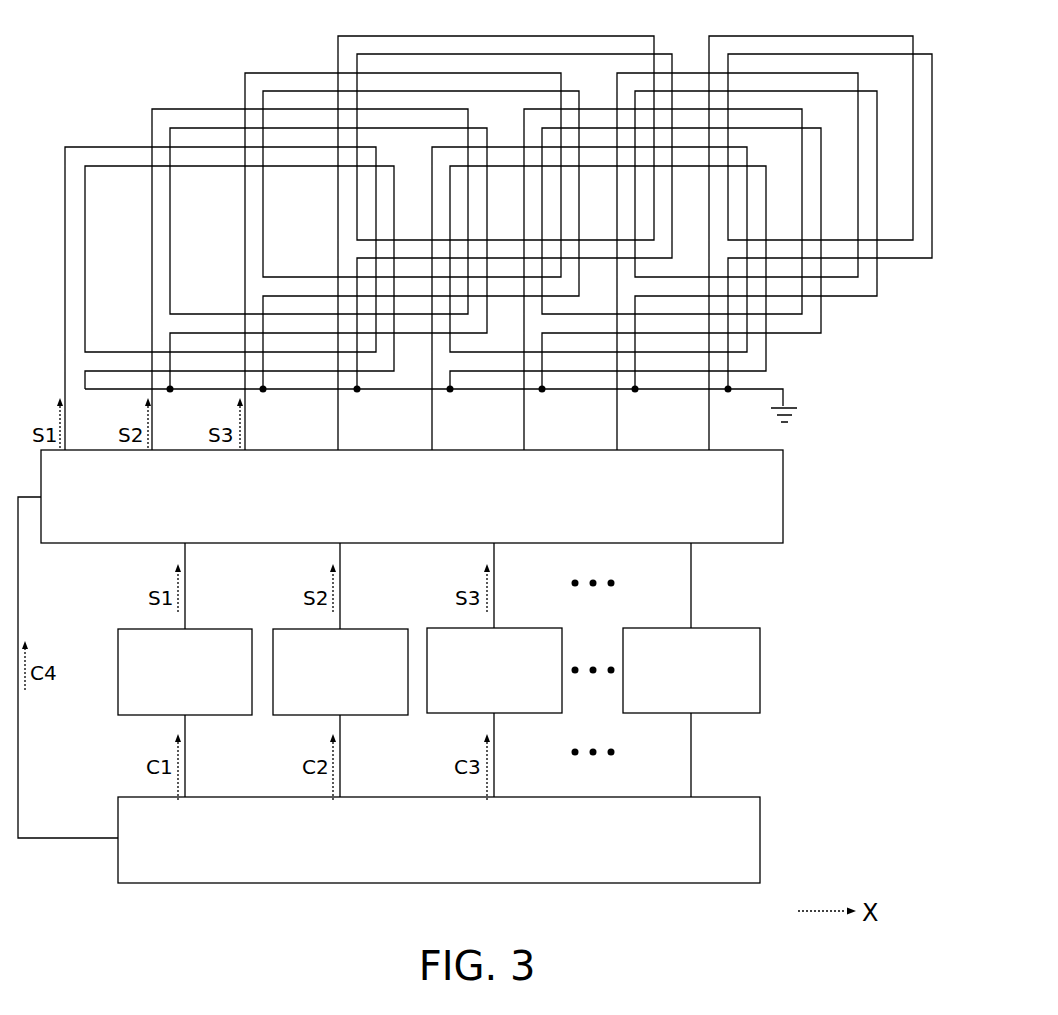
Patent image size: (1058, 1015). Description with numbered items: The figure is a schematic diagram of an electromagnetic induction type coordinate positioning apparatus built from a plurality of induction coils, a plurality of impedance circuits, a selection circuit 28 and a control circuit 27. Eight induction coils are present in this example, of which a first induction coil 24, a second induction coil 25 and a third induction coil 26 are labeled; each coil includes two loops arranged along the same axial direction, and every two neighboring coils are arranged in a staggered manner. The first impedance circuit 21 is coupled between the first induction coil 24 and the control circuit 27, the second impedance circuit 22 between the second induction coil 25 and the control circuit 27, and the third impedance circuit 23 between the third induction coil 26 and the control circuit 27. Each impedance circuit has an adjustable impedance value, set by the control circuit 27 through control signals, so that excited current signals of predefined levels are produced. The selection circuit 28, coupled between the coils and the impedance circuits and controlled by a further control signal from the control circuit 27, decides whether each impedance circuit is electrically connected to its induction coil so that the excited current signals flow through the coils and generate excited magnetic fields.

The first impedance circuit 21 is at (220, 629).
The second impedance circuit 22 is at (376, 629).
The third impedance circuit 23 is at (528, 628).
The first induction coil 24 is at (92, 146).
The second induction coil 25 is at (183, 108).
The third induction coil 26 is at (273, 72).
The control circuit 27 is at (760, 838).
The selection circuit 28 is at (783, 497).